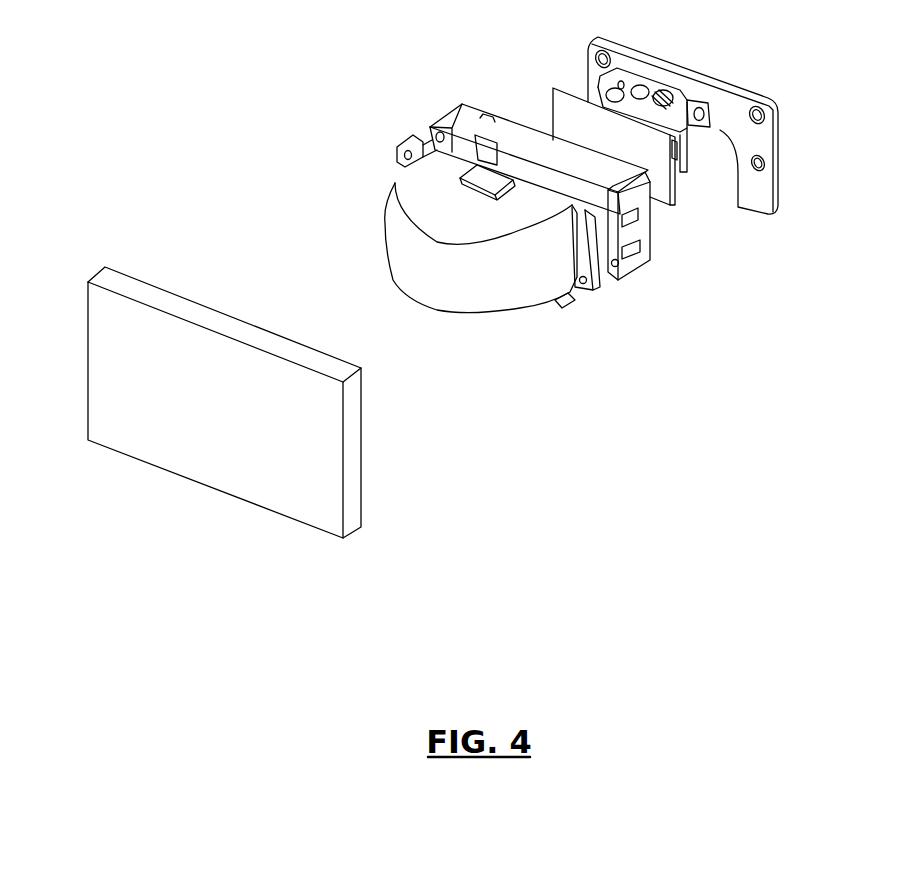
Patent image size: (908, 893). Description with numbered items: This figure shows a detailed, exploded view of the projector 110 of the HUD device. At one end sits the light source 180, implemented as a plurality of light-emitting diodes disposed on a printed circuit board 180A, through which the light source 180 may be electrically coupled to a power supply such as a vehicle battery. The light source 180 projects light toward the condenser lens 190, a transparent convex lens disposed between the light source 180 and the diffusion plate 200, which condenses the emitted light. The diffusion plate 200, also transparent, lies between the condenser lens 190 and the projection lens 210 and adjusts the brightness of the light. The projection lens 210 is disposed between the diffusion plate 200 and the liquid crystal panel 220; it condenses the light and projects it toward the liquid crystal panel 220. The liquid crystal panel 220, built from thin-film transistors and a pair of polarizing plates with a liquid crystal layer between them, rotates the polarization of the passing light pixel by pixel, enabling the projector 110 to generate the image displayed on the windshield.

The projector 110 is at (343, 131).
The light source 180 is at (687, 180).
The printed circuit board 180A is at (760, 140).
The condenser lens 190 is at (703, 188).
The diffusion plate 200 is at (672, 187).
The projection lens 210 is at (483, 298).
The liquid crystal panel 220 is at (357, 488).